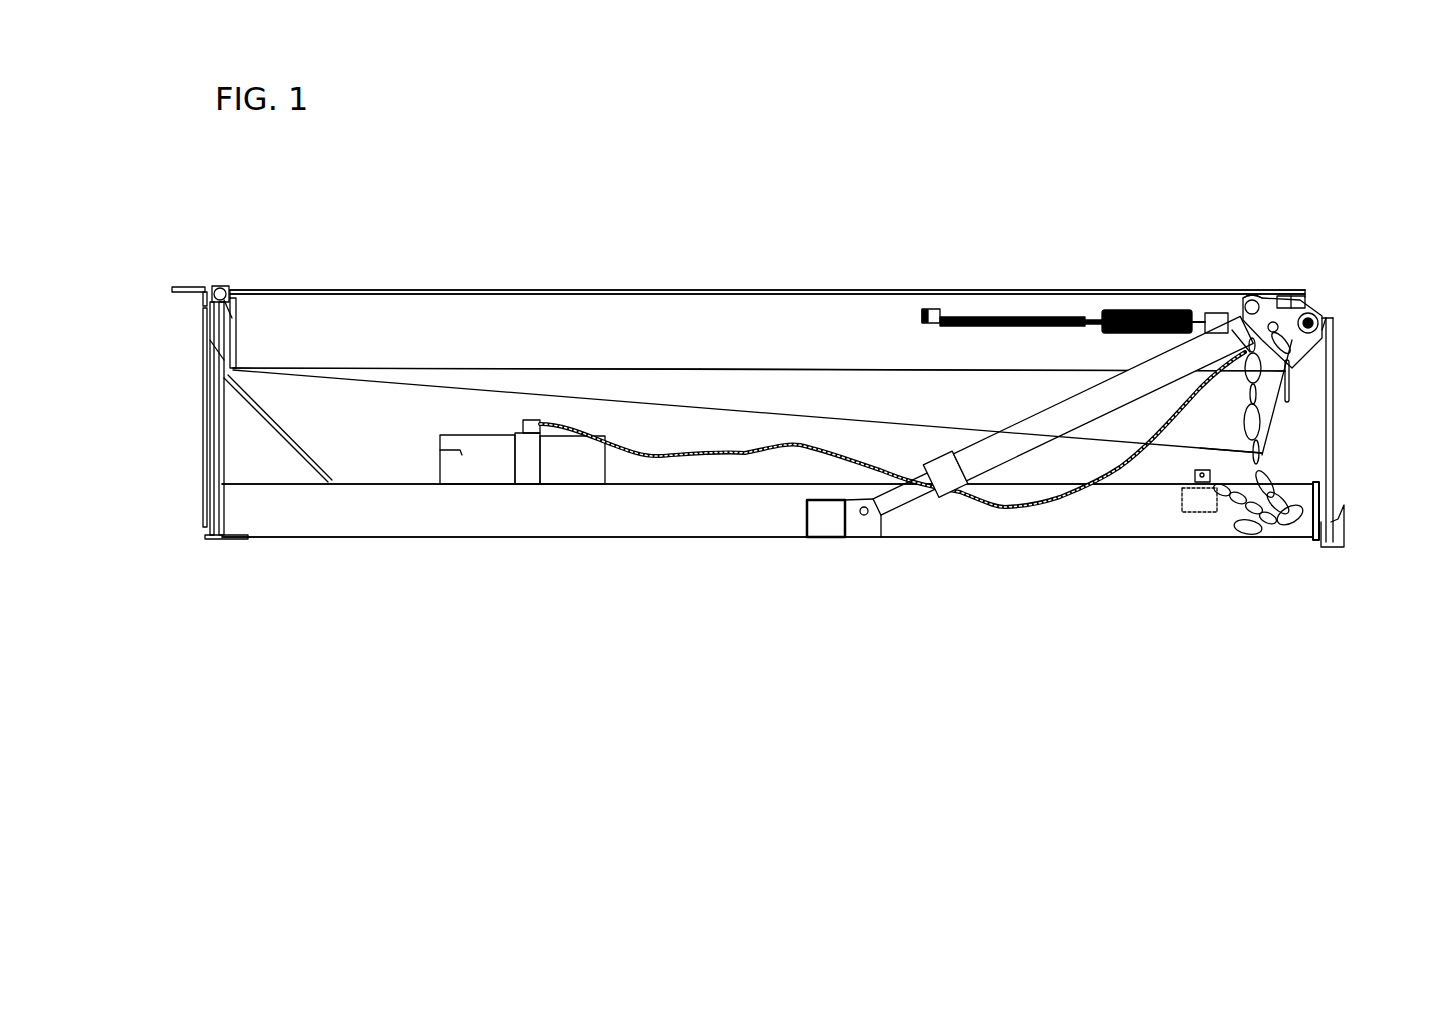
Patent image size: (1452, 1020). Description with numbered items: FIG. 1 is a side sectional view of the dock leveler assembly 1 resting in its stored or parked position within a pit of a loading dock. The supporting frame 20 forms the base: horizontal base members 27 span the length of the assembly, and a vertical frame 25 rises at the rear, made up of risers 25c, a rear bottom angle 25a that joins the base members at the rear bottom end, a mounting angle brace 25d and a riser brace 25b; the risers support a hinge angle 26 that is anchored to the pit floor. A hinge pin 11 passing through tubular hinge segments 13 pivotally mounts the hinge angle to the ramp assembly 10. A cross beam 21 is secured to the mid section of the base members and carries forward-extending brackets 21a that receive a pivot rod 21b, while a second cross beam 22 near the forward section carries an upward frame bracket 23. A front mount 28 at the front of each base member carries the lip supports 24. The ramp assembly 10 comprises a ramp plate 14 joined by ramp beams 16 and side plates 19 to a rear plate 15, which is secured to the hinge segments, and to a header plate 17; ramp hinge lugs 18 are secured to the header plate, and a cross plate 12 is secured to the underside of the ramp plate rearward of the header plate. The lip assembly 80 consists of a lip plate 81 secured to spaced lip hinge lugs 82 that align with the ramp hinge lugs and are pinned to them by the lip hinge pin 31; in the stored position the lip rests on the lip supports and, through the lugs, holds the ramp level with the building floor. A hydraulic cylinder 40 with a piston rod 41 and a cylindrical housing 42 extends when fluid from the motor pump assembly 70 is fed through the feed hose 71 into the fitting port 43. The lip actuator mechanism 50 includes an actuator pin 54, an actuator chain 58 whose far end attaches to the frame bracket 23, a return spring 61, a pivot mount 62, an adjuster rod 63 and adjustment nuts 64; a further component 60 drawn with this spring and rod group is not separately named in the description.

The dock leveler assembly 1 is at (676, 276).
The ramp assembly 10 is at (753, 284).
The hinge pin 11 is at (237, 320).
The cross plate 12 is at (945, 343).
The hinge tubes 13 is at (221, 283).
The ramp plate 14 is at (521, 290).
The rear plate 15 is at (213, 348).
The ramp beams 16 is at (448, 320).
The header plate 17 is at (1287, 402).
The ramp hinge lugs 18 is at (1317, 304).
The side plates 19 is at (862, 395).
The supporting frame 20 is at (383, 552).
The cross beam 21 is at (807, 525).
The brackets 21a is at (863, 537).
The pivot rod 21b is at (862, 505).
The second cross beam 22 is at (1180, 538).
The frame bracket 23 is at (1193, 475).
The lip supports 24 is at (1333, 541).
The vertical frame 25 is at (202, 528).
The rear bottom angle 25a is at (218, 541).
The riser brace 25b is at (290, 435).
The risers 25c is at (210, 412).
The mounting angle brace 25d is at (205, 468).
The hinge angle 26 is at (190, 290).
The base members 27 is at (545, 515).
The front mount 28 is at (1302, 545).
The lip hinge pin 31 is at (1320, 315).
The hydraulic cylinder 40 is at (1063, 451).
The piston rod 41 is at (913, 495).
The cylindrical housing 42 is at (1130, 392).
The fitting port 43 is at (1203, 342).
The lip actuator mechanism 50 is at (1340, 325).
The actuator pin 54 is at (1298, 296).
The actuator chain 58 is at (1268, 458).
The gas spring 60 is at (1060, 294).
The return spring 61 is at (1100, 334).
The pivot mount 62 is at (1245, 298).
The adjuster rod 63 is at (985, 316).
The adjustment nuts 64 is at (925, 295).
The motor pump assembly 70 is at (443, 447).
The feed hose 71 is at (676, 453).
The lip assembly 80 is at (1387, 429).
The lip plate 81 is at (1338, 396).
The lip hinge lugs 82 is at (1338, 362).